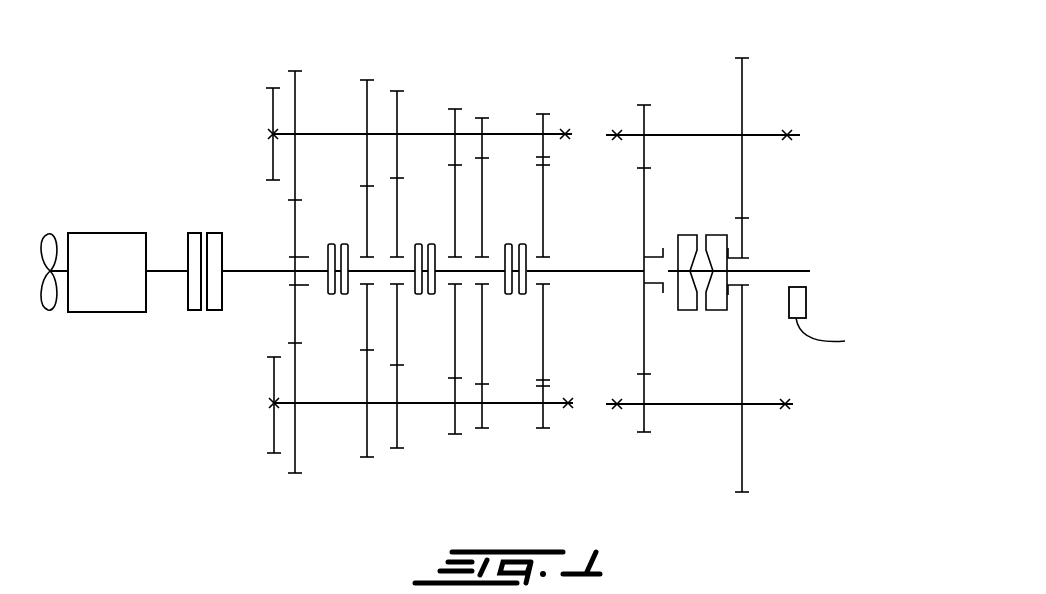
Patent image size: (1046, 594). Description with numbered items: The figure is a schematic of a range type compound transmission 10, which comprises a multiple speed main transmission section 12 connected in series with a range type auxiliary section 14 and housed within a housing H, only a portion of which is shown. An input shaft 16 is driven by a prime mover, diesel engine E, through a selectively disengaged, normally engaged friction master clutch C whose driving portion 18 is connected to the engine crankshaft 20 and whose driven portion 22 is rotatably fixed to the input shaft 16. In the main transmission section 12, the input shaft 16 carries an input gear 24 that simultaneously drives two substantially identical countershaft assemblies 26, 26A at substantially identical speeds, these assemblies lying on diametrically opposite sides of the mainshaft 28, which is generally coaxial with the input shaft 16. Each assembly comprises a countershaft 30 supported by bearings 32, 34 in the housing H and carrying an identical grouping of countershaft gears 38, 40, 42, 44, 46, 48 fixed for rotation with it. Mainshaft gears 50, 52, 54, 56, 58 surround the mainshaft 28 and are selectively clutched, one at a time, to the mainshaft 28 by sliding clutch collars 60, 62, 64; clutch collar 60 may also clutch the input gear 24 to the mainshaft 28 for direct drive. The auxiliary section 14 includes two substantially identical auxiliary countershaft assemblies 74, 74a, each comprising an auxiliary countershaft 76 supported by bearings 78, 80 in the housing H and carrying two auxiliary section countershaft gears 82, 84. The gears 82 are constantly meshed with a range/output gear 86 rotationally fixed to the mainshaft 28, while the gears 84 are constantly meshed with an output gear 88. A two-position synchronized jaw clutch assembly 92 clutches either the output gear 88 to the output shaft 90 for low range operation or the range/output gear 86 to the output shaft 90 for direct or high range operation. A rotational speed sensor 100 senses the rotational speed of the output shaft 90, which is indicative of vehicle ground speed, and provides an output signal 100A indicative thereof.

The compound transmission 10 is at (591, 119).
The main transmission section 12 is at (431, 91).
The auxiliary section 14 is at (686, 79).
The input shaft 16 is at (262, 268).
The driving portion 18 is at (193, 312).
The engine crankshaft 20 is at (172, 271).
The driven portion 22 is at (222, 312).
The input gear 24 is at (297, 226).
The countershaft assembly 26 is at (318, 118).
The countershaft assembly 26A is at (336, 404).
The mainshaft 28 is at (607, 272).
The countershaft 30 is at (334, 136).
The bearing 32 is at (268, 405).
The bearing 34 is at (574, 407).
The countershaft gear 38 is at (297, 463).
The countershaft gear 40 is at (368, 452).
The countershaft gear 42 is at (398, 438).
The countershaft gear 44 is at (455, 436).
The countershaft gear 46 is at (484, 421).
The countershaft gear 48 is at (541, 419).
The mainshaft gear 50 is at (358, 340).
The mainshaft gear 52 is at (412, 306).
The mainshaft gear 54 is at (447, 338).
The mainshaft gear 56 is at (489, 304).
The mainshaft gear 58 is at (540, 345).
The sliding clutch collar 60 is at (331, 295).
The sliding clutch collar 62 is at (455, 242).
The sliding clutch collar 64 is at (486, 244).
The auxiliary countershaft assembly 74 is at (676, 128).
The auxiliary countershaft assembly 74a is at (709, 414).
The auxiliary countershaft 76 is at (712, 136).
The bearing 78 is at (606, 137).
The bearing 80 is at (796, 136).
The auxiliary section countershaft gear 82 is at (644, 121).
The auxiliary section countershaft gear 84 is at (745, 103).
The range/output gear 86 is at (644, 222).
The output gear 88 is at (742, 221).
The output shaft 90 is at (767, 261).
The synchronized jaw clutch assembly 92 is at (686, 323).
The rotational speed sensor 100 is at (817, 295).
The output signal 100A is at (851, 334).
The housing H is at (273, 110).
The master clutch C is at (204, 226).
The engine E is at (93, 272).